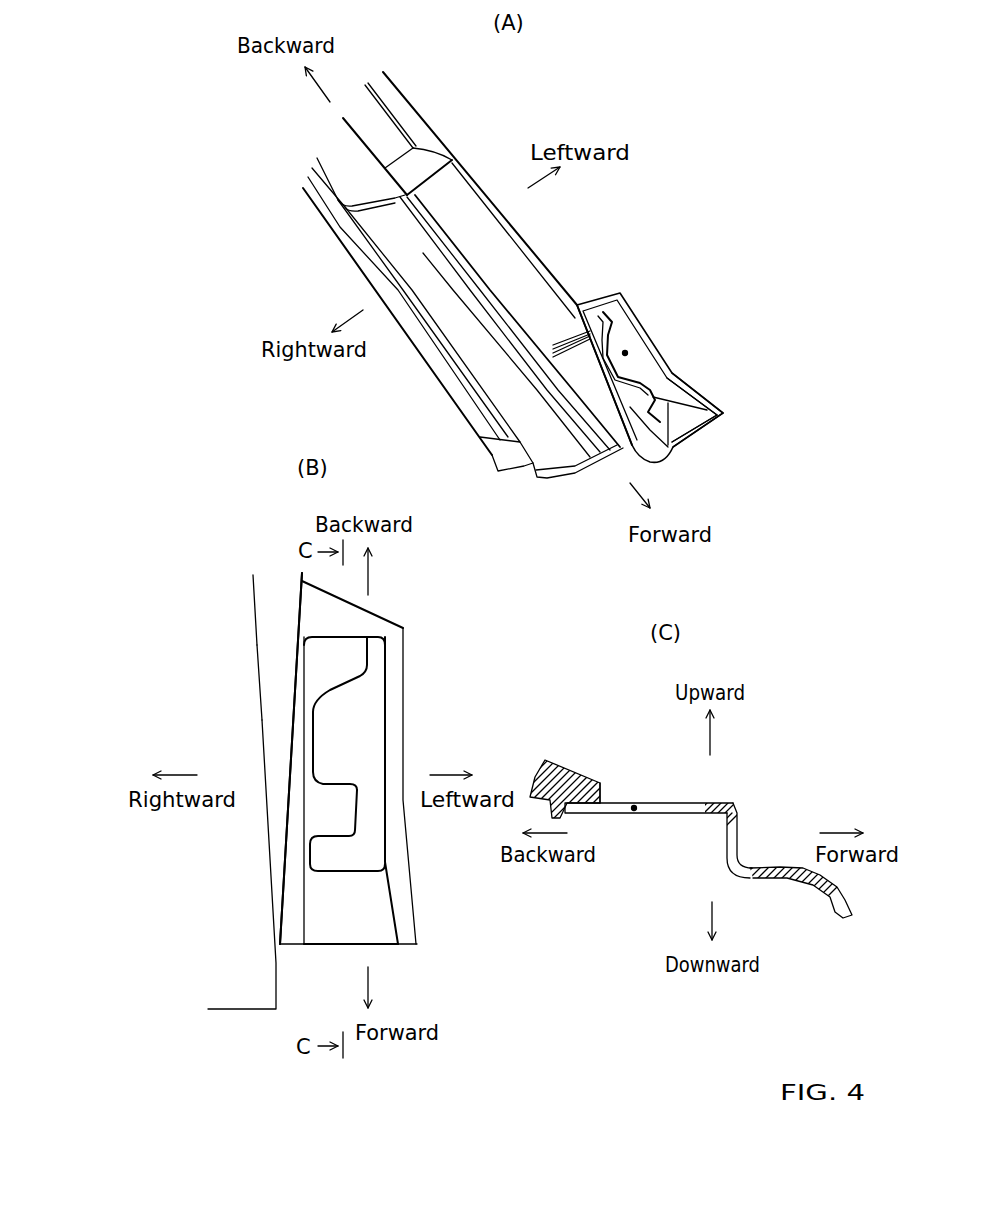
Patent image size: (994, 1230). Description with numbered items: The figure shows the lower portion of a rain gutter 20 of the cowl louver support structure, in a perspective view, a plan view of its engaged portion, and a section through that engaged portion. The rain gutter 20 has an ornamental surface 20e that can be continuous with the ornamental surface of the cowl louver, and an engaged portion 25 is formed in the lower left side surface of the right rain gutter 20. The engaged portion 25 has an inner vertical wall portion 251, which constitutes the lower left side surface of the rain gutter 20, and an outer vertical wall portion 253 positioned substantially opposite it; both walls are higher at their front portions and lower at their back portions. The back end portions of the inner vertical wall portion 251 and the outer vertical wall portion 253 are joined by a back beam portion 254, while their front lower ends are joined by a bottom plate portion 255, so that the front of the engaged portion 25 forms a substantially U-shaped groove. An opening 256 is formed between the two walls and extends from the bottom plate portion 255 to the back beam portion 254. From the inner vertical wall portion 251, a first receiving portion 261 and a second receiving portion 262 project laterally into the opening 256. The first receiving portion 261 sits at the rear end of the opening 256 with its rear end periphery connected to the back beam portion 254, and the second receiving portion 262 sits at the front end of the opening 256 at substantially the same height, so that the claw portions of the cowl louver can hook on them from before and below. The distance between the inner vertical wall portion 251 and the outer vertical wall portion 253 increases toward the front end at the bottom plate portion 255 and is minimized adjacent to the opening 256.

The rain gutter 20 is at (450, 132).
The ornamental surface 20e is at (513, 270).
The engaged portion 25 is at (712, 368).
The inner vertical wall portion 251 is at (652, 432).
The outer vertical wall portion 253 is at (690, 390).
The back beam portion 254 is at (593, 308).
The bottom plate portion 255 is at (685, 430).
The opening 256 is at (625, 353).
The first receiving portion 261 is at (636, 317).
The second receiving portion 262 is at (650, 378).